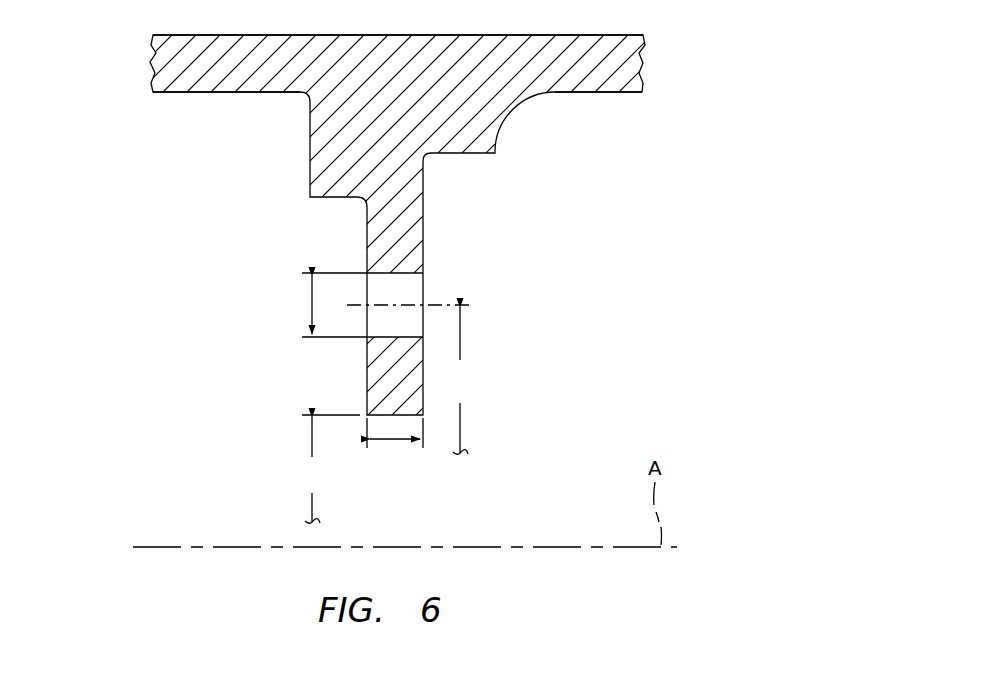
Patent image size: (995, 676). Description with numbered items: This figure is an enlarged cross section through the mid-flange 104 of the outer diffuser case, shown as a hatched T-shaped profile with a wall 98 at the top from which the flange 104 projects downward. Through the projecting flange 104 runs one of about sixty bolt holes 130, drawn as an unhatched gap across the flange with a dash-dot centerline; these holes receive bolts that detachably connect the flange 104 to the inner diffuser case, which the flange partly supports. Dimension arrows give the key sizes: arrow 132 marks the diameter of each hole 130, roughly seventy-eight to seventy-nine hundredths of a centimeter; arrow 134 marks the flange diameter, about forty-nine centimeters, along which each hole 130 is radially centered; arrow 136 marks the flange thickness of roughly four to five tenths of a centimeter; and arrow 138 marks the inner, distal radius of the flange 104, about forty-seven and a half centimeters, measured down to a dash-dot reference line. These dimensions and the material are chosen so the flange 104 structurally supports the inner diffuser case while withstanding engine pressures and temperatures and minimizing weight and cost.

The housing wall 98 is at (593, 62).
The mid-flange 104 is at (186, 213).
The bolt hole 130 is at (408, 288).
The hole diameter 132 is at (311, 304).
The flange diameter 134 is at (461, 380).
The flange thickness 136 is at (393, 440).
The inner distal radius 138 is at (326, 469).